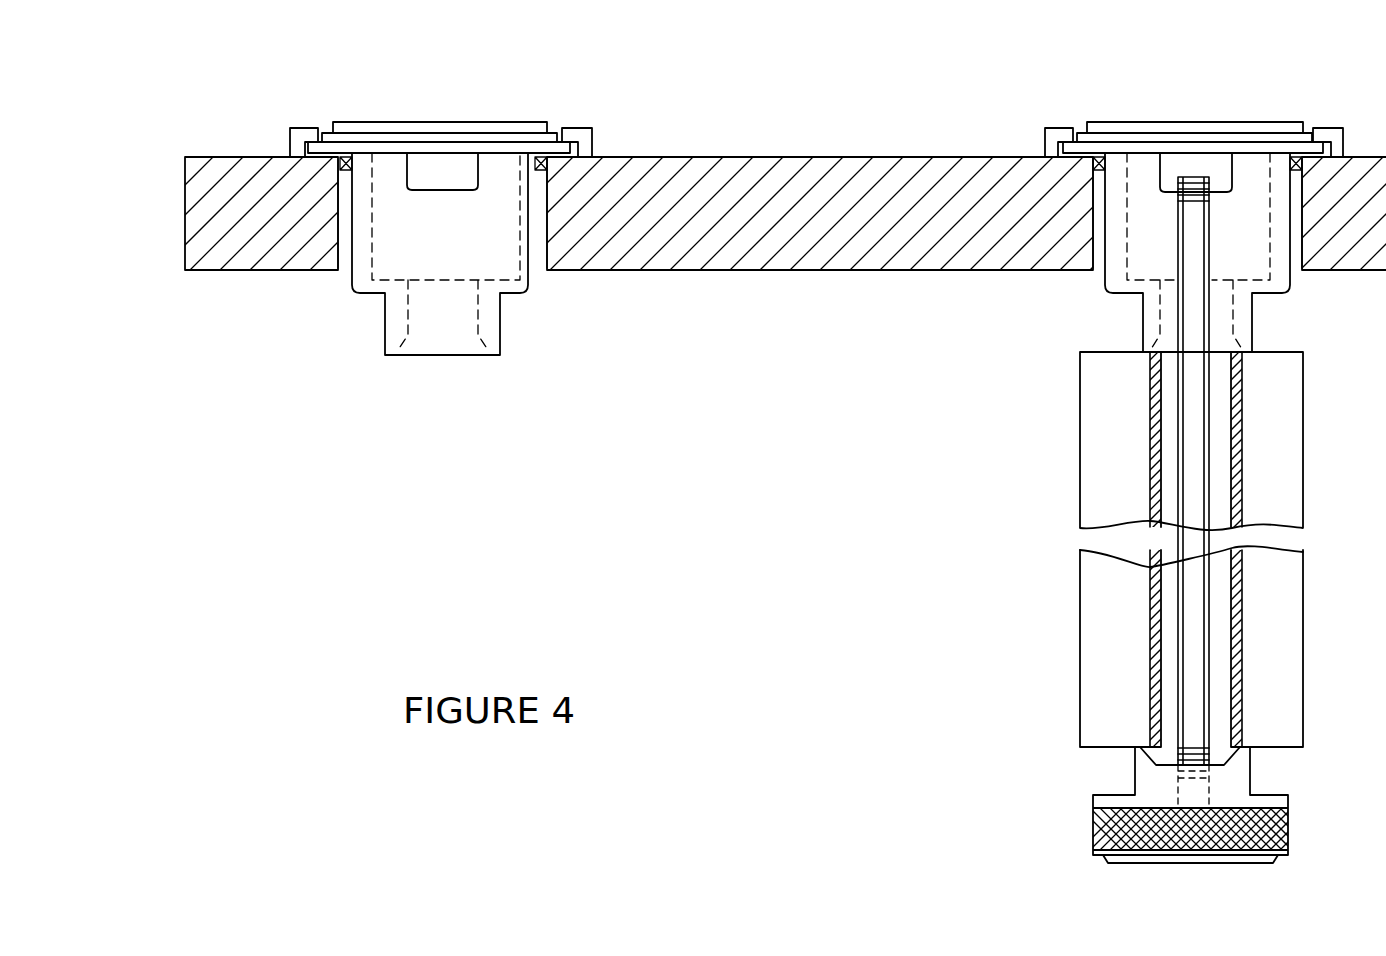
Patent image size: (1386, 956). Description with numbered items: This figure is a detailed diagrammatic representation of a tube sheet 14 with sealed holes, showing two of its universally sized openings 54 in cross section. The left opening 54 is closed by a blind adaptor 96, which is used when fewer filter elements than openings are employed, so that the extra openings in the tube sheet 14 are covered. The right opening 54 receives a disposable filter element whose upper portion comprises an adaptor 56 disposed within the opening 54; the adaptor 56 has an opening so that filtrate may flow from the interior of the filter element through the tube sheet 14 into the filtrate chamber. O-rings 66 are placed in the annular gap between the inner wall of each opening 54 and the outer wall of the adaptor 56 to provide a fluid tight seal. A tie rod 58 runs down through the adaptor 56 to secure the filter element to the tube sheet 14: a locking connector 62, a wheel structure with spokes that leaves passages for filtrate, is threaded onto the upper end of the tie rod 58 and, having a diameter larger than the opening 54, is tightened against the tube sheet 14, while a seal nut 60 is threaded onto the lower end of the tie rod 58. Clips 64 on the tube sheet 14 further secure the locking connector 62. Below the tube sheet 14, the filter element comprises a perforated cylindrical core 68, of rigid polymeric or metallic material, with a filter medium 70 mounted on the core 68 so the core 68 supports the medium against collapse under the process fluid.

The tube sheet 14 is at (205, 157).
The clips 64 is at (303, 128).
The locking connector 62 is at (372, 143).
The blind adaptor 96 is at (522, 106).
The o-rings 66 is at (343, 160).
The adaptor 56 is at (352, 295).
The opening 54 is at (540, 272).
The tie rod 58 is at (1190, 397).
The filter medium 70 is at (1092, 651).
The perforated cylindrical core 68 is at (1165, 697).
The seal nut 60 is at (1096, 838).